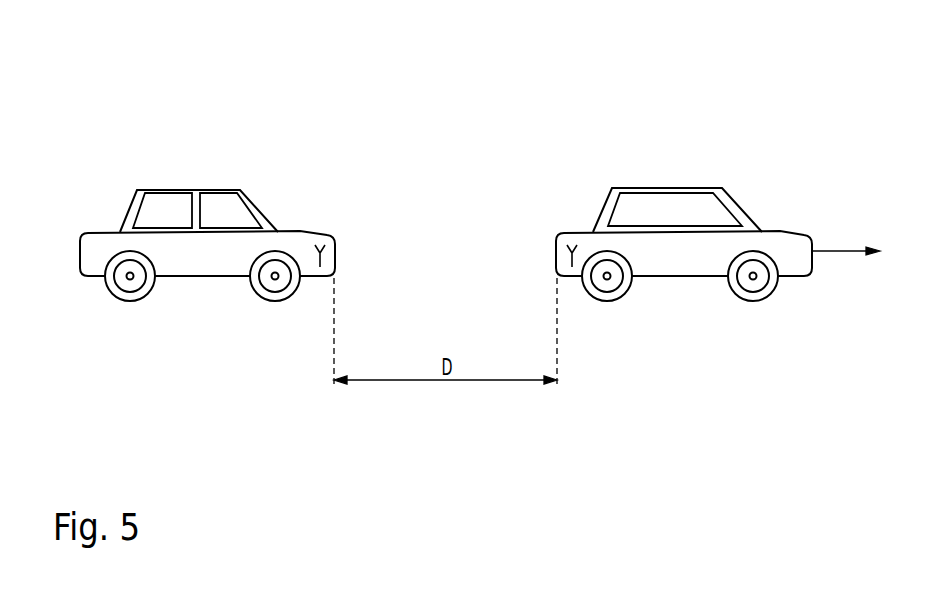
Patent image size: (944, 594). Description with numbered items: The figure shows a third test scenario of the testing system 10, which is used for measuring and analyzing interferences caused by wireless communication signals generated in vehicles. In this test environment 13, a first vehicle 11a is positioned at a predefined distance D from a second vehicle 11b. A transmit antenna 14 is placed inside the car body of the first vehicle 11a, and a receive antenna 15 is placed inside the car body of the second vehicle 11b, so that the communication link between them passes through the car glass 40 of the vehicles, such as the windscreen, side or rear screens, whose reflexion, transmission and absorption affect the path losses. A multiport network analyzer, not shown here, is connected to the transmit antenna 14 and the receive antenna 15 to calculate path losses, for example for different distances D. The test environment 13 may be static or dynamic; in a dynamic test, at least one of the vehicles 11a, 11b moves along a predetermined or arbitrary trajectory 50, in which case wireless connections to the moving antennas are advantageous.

The testing system 10 is at (647, 95).
The test environment 13 is at (175, 98).
The first vehicle 11a is at (80, 256).
The second vehicle 11b is at (782, 229).
The transmit antenna 14 is at (320, 243).
The receive antenna 15 is at (572, 243).
The car glass 40 is at (165, 202).
The trajectory 50 is at (835, 258).